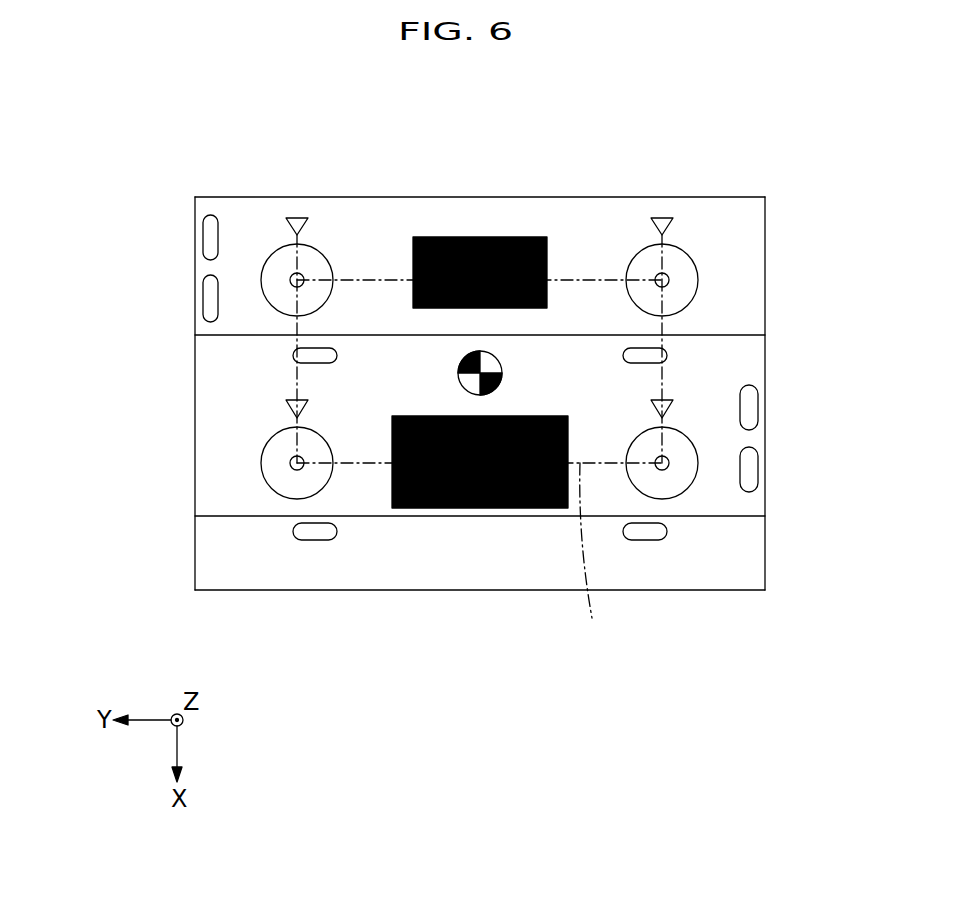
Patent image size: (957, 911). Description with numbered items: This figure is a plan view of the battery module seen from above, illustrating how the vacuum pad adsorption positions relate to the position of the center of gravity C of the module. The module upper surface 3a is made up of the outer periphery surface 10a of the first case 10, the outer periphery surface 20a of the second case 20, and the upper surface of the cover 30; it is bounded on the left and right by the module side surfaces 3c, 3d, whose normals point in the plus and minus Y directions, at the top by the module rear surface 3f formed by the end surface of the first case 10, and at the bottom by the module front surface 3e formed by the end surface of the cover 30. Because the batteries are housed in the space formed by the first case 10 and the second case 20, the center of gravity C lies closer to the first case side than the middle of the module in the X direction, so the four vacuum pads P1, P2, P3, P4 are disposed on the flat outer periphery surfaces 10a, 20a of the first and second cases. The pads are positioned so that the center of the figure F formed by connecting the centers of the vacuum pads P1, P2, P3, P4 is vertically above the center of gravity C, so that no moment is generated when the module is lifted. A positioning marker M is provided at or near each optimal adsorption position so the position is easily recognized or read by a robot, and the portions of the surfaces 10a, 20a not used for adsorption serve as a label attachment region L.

The first case 10 is at (248, 216).
The outer periphery surface 10a is at (230, 236).
The second case 20 is at (213, 478).
The outer periphery surface 20a is at (233, 400).
The cover 30 is at (252, 560).
The module upper surface 3a is at (380, 498).
The module side surface 3c is at (195, 353).
The module side surface 3d is at (765, 357).
The module front surface 3e is at (490, 590).
The module rear surface 3f is at (561, 197).
The vacuum pad P1 is at (318, 262).
The vacuum pad P2 is at (273, 475).
The vacuum pad P3 is at (693, 262).
The vacuum pad P4 is at (680, 482).
The positioning marker M is at (297, 217).
The label attachment region L is at (480, 237).
The center of gravity C is at (485, 363).
The figure F is at (590, 558).